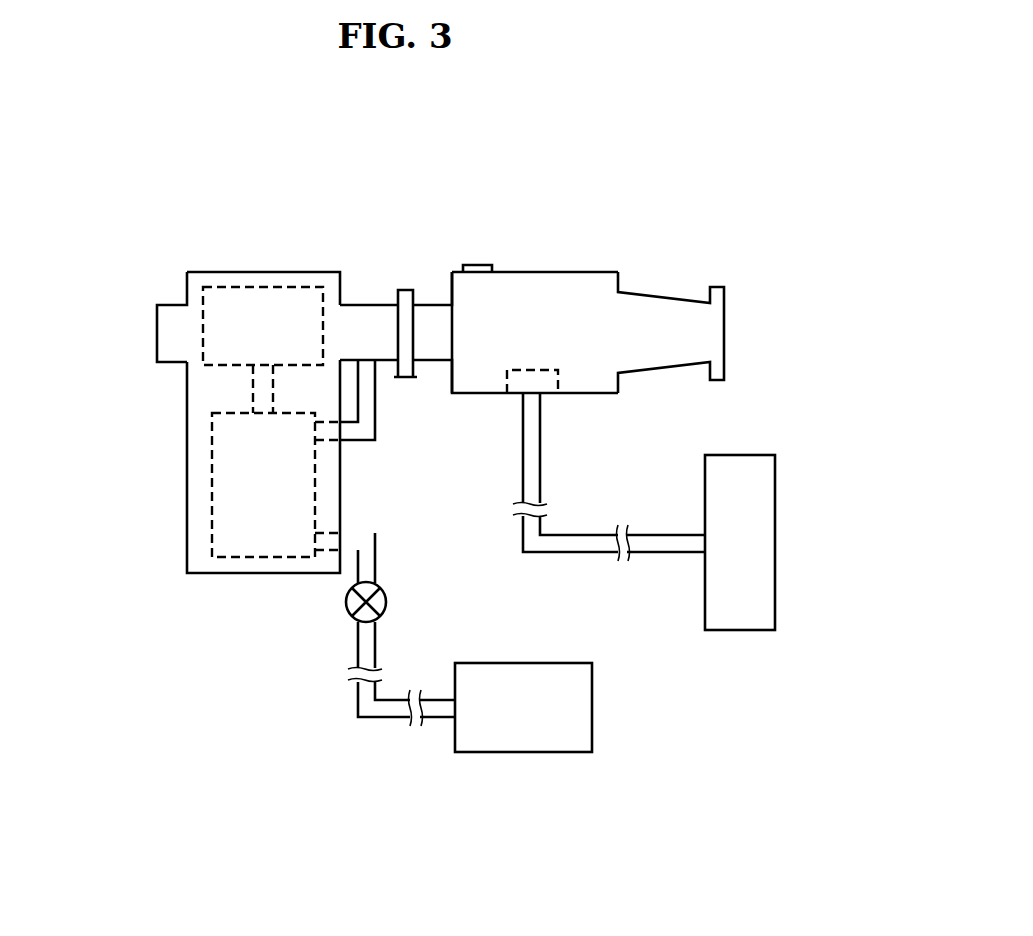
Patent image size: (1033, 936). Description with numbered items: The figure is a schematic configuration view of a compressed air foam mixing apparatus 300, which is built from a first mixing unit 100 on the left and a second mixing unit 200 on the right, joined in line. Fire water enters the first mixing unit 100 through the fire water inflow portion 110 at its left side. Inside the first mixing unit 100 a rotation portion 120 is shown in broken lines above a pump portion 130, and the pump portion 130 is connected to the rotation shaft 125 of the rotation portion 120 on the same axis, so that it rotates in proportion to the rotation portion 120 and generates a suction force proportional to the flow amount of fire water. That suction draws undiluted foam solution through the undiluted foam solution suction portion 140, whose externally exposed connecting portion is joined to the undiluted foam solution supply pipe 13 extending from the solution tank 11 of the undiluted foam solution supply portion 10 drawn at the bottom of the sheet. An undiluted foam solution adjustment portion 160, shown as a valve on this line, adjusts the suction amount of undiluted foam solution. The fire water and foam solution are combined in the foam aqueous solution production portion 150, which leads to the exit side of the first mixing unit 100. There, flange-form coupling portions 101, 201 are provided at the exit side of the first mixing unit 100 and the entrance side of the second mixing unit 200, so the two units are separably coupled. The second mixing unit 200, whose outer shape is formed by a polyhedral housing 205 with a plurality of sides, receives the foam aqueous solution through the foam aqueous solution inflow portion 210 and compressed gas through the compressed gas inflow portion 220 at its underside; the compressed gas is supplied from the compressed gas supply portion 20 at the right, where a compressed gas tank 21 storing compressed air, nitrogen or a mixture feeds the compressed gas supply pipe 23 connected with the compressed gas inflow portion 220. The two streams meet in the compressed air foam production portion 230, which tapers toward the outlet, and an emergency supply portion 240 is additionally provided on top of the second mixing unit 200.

The compressed air foam mixing apparatus 300 is at (686, 190).
The first mixing unit 100 is at (203, 254).
The fire water inflow portion 110 is at (163, 318).
The rotation portion 120 is at (263, 286).
The rotation shaft 125 is at (253, 388).
The pump portion 130 is at (212, 484).
The undiluted foam solution suction portion 140 is at (338, 429).
The foam aqueous solution production portion 150 is at (381, 322).
The undiluted foam solution adjustment portion 160 is at (347, 609).
The coupling portion 101 is at (405, 380).
The coupling portion 201 is at (412, 380).
The foam aqueous solution inflow portion 210 is at (442, 322).
The second mixing unit 200 is at (615, 248).
The housing 205 is at (516, 271).
The compressed air foam production portion 230 is at (569, 320).
The emergency supply portion 240 is at (478, 264).
The compressed gas inflow portion 220 is at (557, 381).
The undiluted foam solution supply portion 10 is at (527, 843).
The solution tank 11 is at (527, 733).
The undiluted foam solution supply pipe 13 is at (388, 712).
The compressed gas supply portion 20 is at (668, 723).
The compressed gas tank 21 is at (738, 612).
The compressed gas supply pipe 23 is at (668, 552).